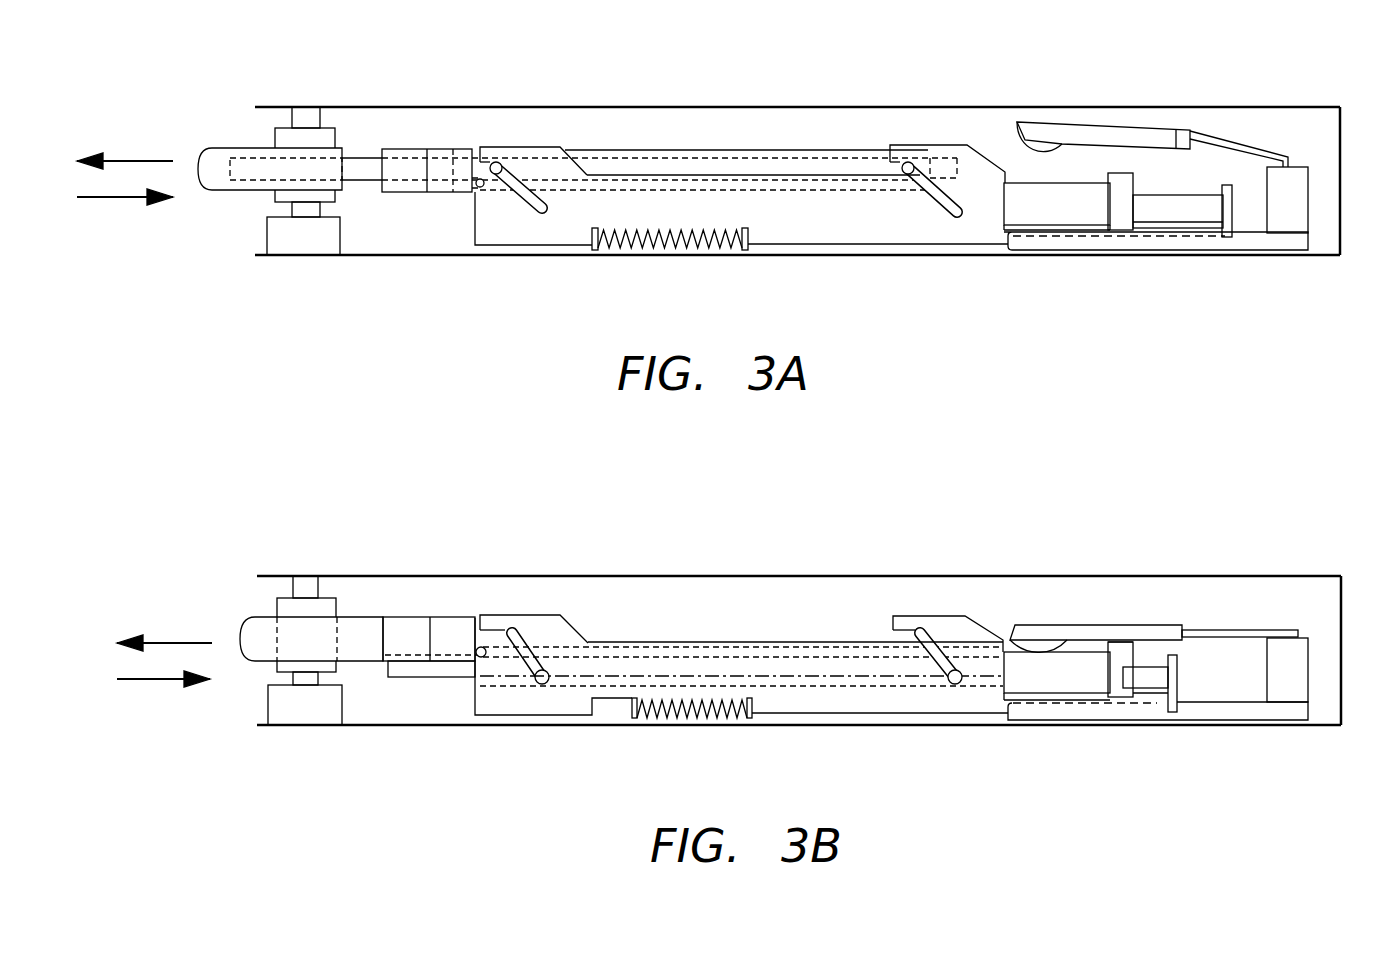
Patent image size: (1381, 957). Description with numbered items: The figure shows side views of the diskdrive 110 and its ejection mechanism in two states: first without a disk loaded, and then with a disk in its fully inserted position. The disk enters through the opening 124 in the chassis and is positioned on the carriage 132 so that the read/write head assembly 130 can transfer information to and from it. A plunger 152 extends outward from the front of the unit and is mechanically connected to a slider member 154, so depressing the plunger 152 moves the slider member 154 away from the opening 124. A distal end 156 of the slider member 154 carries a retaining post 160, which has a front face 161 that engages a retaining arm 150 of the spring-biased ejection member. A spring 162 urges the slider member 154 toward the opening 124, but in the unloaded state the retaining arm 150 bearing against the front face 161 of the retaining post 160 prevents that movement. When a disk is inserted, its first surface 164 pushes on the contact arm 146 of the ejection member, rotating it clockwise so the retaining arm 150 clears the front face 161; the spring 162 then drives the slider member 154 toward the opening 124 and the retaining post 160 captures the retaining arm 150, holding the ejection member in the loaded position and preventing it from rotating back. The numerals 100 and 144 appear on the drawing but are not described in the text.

In FIG. 3A, the cartridge 100 is at (1232, 207).
In FIG. 3B, the diskdrive 110 is at (1075, 683).
In FIG. 3A, the opening 124 is at (262, 122).
In FIG. 3B, the opening 124 is at (272, 586).
In FIG. 3A, the read/write head assembly 130 is at (1245, 148).
In FIG. 3B, the read/write head assembly 130 is at (1285, 630).
In FIG. 3A, the carriage 132 is at (860, 152).
In FIG. 3B, the carriage 132 is at (745, 648).
In FIG. 3A, the pusher 144 is at (1124, 178).
In FIG. 3B, the pusher 144 is at (1123, 657).
In FIG. 3A, the contact arm 146 is at (1065, 185).
In FIG. 3B, the contact arm 146 is at (1015, 660).
In FIG. 3A, the retaining arm 150 is at (1160, 210).
In FIG. 3B, the retaining arm 150 is at (1147, 677).
In FIG. 3A, the plunger 152 is at (220, 198).
In FIG. 3B, the plunger 152 is at (250, 628).
In FIG. 3A, the slider member 154 is at (495, 222).
In FIG. 3B, the slider member 154 is at (497, 690).
In FIG. 3A, the distal end 156 is at (857, 215).
In FIG. 3B, the distal end 156 is at (1203, 735).
In FIG. 3B, the retaining post 160 is at (1178, 675).
In FIG. 3A, the front face 161 is at (1220, 190).
In FIG. 3A, the spring 162 is at (665, 247).
In FIG. 3B, the spring 162 is at (720, 722).
In FIG. 3B, the first surface 164 is at (1118, 645).